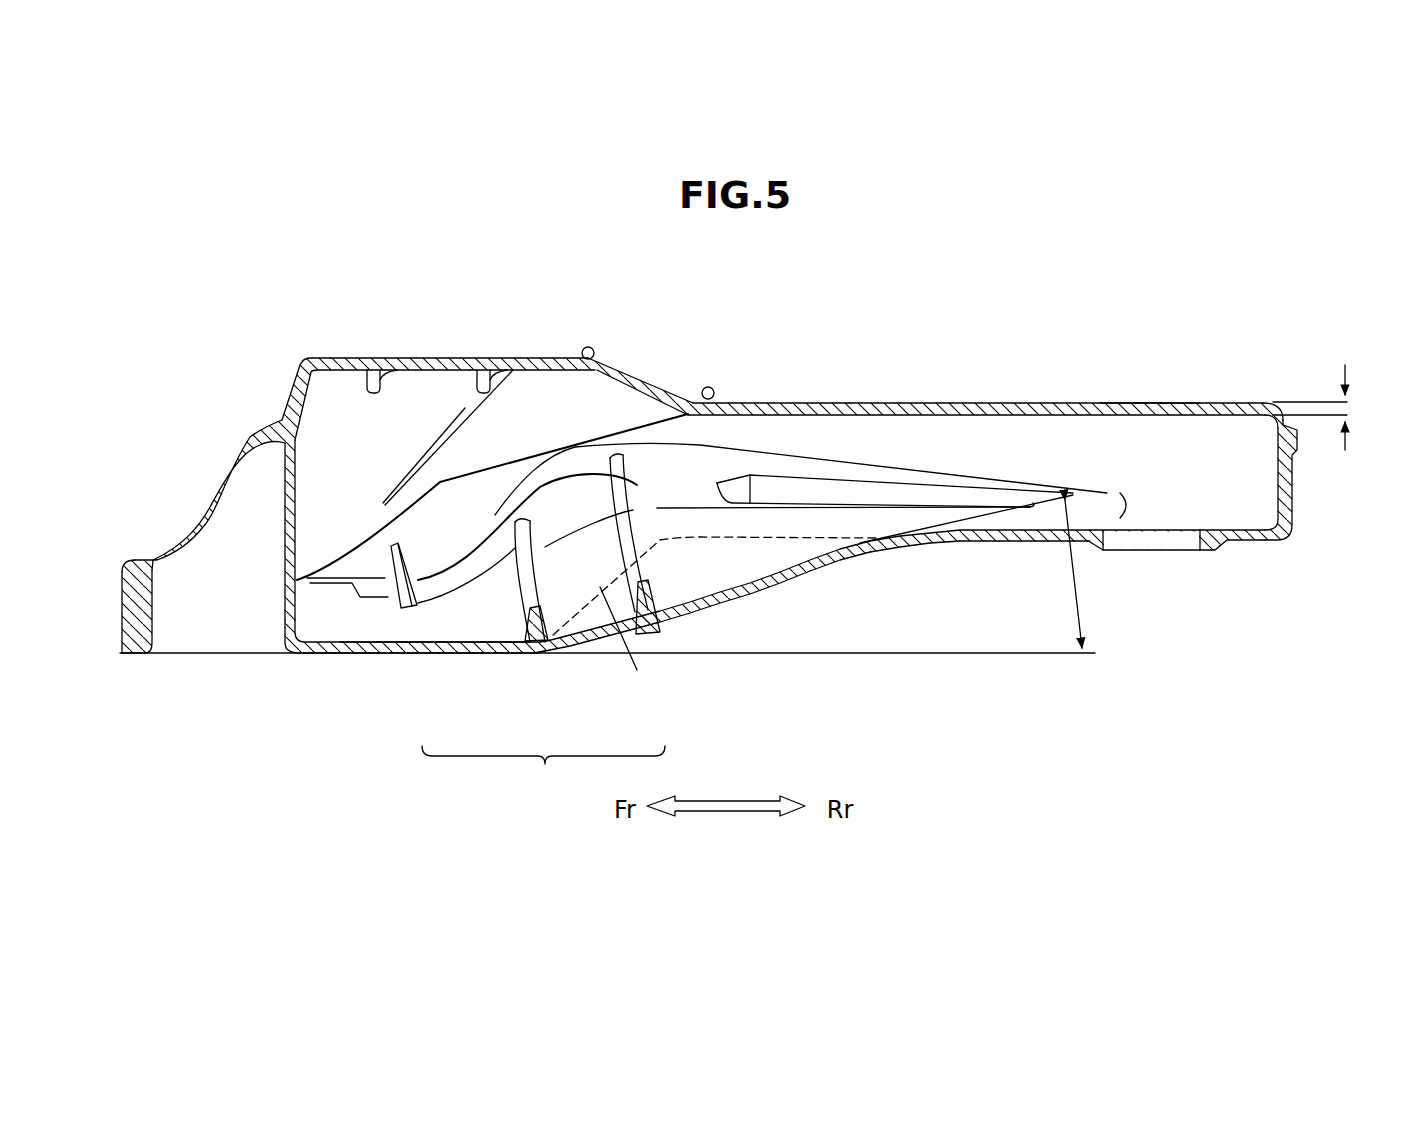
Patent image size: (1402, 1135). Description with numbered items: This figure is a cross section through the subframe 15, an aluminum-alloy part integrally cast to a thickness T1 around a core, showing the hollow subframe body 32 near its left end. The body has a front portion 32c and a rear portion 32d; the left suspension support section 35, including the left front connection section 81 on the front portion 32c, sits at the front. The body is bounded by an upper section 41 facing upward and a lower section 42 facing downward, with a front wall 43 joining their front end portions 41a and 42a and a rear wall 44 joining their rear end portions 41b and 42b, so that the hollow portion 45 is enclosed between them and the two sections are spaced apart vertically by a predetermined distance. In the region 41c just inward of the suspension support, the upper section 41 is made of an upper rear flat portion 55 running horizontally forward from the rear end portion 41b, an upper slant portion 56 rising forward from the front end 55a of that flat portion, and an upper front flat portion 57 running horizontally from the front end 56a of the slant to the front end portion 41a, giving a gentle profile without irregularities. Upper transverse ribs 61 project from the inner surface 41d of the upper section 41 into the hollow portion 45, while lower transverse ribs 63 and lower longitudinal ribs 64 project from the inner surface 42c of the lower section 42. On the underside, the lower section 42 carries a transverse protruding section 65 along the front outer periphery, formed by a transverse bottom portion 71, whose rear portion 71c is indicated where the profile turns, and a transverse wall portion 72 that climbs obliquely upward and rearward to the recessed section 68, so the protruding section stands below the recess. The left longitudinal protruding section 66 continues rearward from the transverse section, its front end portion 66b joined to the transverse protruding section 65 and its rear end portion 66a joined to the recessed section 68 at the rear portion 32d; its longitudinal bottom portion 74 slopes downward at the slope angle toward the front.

The subframe 15 is at (1024, 358).
The subframe body 32 is at (774, 392).
The front portion 32c is at (288, 610).
The rear portion 32d is at (1048, 548).
The left suspension support section 35 is at (117, 587).
The upper section 41 is at (1110, 398).
The front end portion 41a is at (320, 360).
The rear end portion 41b is at (1249, 402).
The region 41c is at (871, 402).
The inner surface 41d is at (437, 378).
The lower section 42 is at (986, 549).
The front end portion 42a is at (313, 657).
The rear end portion 42b is at (1256, 542).
The inner surface 42c is at (482, 640).
The front wall 43 is at (283, 572).
The rear wall 44 is at (1293, 477).
The hollow portion 45 is at (1031, 467).
The upper rear flat portion 55 is at (963, 402).
The front end 55a is at (712, 418).
The upper slant portion 56 is at (628, 375).
The front end 56a is at (592, 372).
The upper front flat portion 57 is at (442, 360).
The upper transverse ribs 61 is at (397, 372).
The lower transverse ribs 63 is at (390, 565).
The lower longitudinal ribs 64 is at (478, 565).
The transverse protruding section 65 is at (543, 772).
The left longitudinal protruding section 66 is at (724, 608).
The rear end portion 66a is at (915, 552).
The front end portion 66b is at (548, 652).
The recessed section 68 is at (743, 540).
The transverse bottom portion 71 is at (437, 657).
The flat bottom wall rear end 71c is at (533, 655).
The transverse wall portion 72 is at (637, 670).
The longitudinal bottom portion 74 is at (808, 563).
The left front connection section 81 is at (120, 623).
The thickness T1 is at (1316, 394).